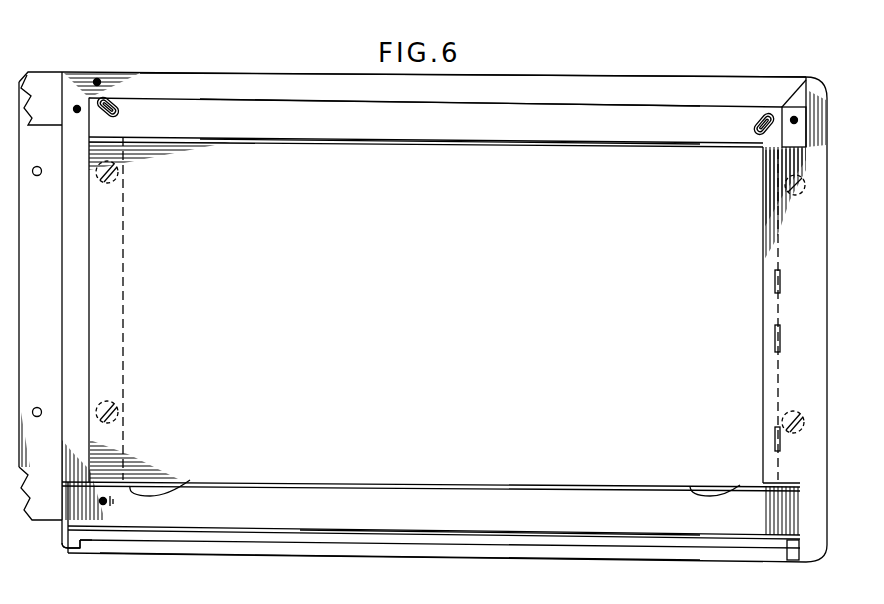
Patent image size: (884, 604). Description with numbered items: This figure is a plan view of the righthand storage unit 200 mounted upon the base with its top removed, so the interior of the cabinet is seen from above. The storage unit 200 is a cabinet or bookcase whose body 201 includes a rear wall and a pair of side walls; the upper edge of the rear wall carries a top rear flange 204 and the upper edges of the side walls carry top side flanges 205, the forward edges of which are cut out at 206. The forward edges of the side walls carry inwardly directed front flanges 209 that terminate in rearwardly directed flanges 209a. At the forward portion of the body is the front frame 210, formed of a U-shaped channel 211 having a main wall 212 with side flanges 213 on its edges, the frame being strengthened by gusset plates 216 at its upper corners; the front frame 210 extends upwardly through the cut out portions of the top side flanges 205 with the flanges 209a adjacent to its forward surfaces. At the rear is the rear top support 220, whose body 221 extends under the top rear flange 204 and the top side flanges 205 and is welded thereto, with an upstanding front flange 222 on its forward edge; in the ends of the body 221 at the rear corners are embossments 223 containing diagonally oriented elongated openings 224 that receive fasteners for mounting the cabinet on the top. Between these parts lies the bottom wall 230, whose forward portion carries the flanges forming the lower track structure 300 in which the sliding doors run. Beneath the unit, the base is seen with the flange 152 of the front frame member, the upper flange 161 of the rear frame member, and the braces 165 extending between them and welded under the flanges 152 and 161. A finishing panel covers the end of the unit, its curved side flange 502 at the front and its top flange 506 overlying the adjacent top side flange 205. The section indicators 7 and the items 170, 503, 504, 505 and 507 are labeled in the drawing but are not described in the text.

The section line 7- 7 is at (73, 172).
The flange 152 is at (62, 520).
The upper flange 161 is at (45, 92).
The braces 165 is at (56, 343).
The fastener holes 170 is at (118, 180).
The righthand storage unit 200 is at (338, 48).
The body 201 is at (247, 70).
The top rear flange 204 is at (562, 86).
The top side flanges 205 is at (78, 308).
The cut out 206 is at (96, 488).
The front flanges 209 is at (72, 550).
The rearwardly directed flanges 209a is at (84, 546).
The front frame 210 is at (351, 476).
The U-shaped channel 211 is at (490, 500).
The main wall 212 is at (434, 517).
The side flanges 213 is at (600, 492).
The gusset plates 216 is at (178, 486).
The rear top support 220 is at (662, 128).
The body 221 is at (437, 128).
The upstanding front flange 222 is at (324, 140).
The embossments 223 is at (114, 100).
The elongated openings 224 is at (118, 112).
The bottom wall 230 is at (437, 355).
The lower track structure 300 is at (556, 545).
The curved side flange 502 is at (822, 556).
The lower corner block 503 is at (806, 562).
The upper corner of right rail 504 is at (836, 68).
The upper corner block 505 is at (780, 100).
The top flange 506 is at (776, 340).
The end tabs 507 is at (775, 283).